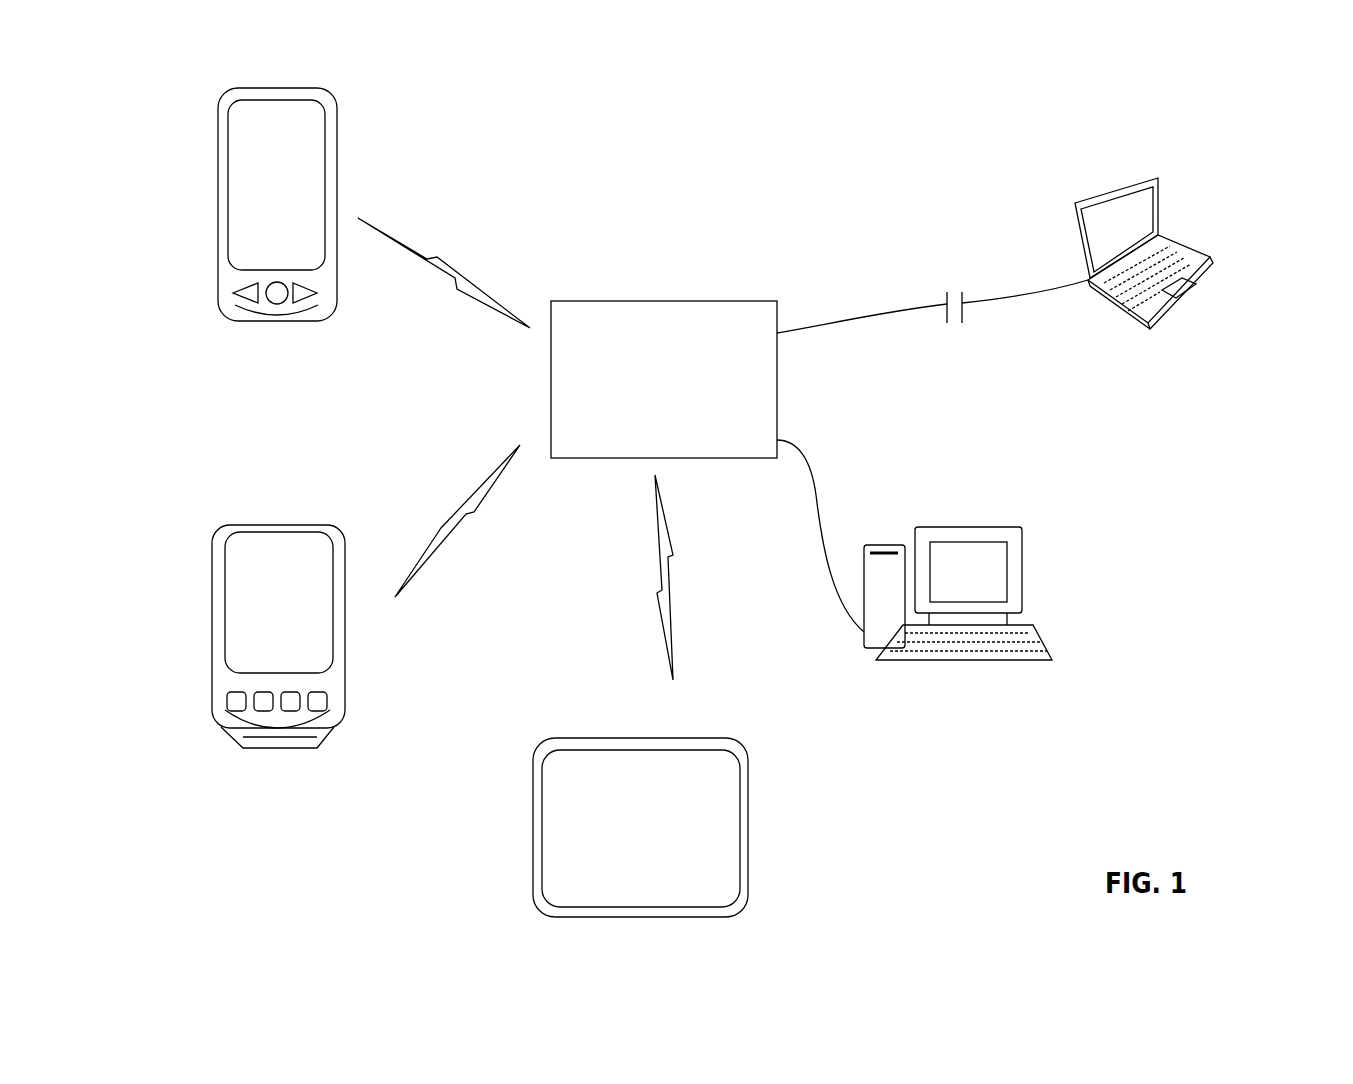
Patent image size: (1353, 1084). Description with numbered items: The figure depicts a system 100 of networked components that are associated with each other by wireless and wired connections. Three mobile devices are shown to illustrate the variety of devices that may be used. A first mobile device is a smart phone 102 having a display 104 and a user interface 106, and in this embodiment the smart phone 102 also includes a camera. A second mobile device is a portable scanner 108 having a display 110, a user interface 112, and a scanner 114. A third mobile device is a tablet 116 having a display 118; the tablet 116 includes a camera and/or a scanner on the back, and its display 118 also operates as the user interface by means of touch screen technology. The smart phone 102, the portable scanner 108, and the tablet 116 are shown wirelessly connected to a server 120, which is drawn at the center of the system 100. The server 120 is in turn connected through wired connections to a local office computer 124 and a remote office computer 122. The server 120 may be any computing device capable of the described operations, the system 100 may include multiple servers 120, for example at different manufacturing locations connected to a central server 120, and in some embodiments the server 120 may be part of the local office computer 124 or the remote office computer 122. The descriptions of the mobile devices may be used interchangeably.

The system 100 is at (765, 179).
The smart phone 102 is at (216, 190).
The display 104 is at (253, 182).
The user interface 106 is at (279, 315).
The portable scanner 108 is at (203, 606).
The display 110 is at (249, 612).
The user interface 112 is at (275, 728).
The scanner 114 is at (280, 754).
The tablet 116 is at (688, 734).
The display 118 is at (617, 834).
The server 120 is at (633, 404).
The remote office computer 122 is at (1184, 226).
The local office computer 124 is at (920, 665).